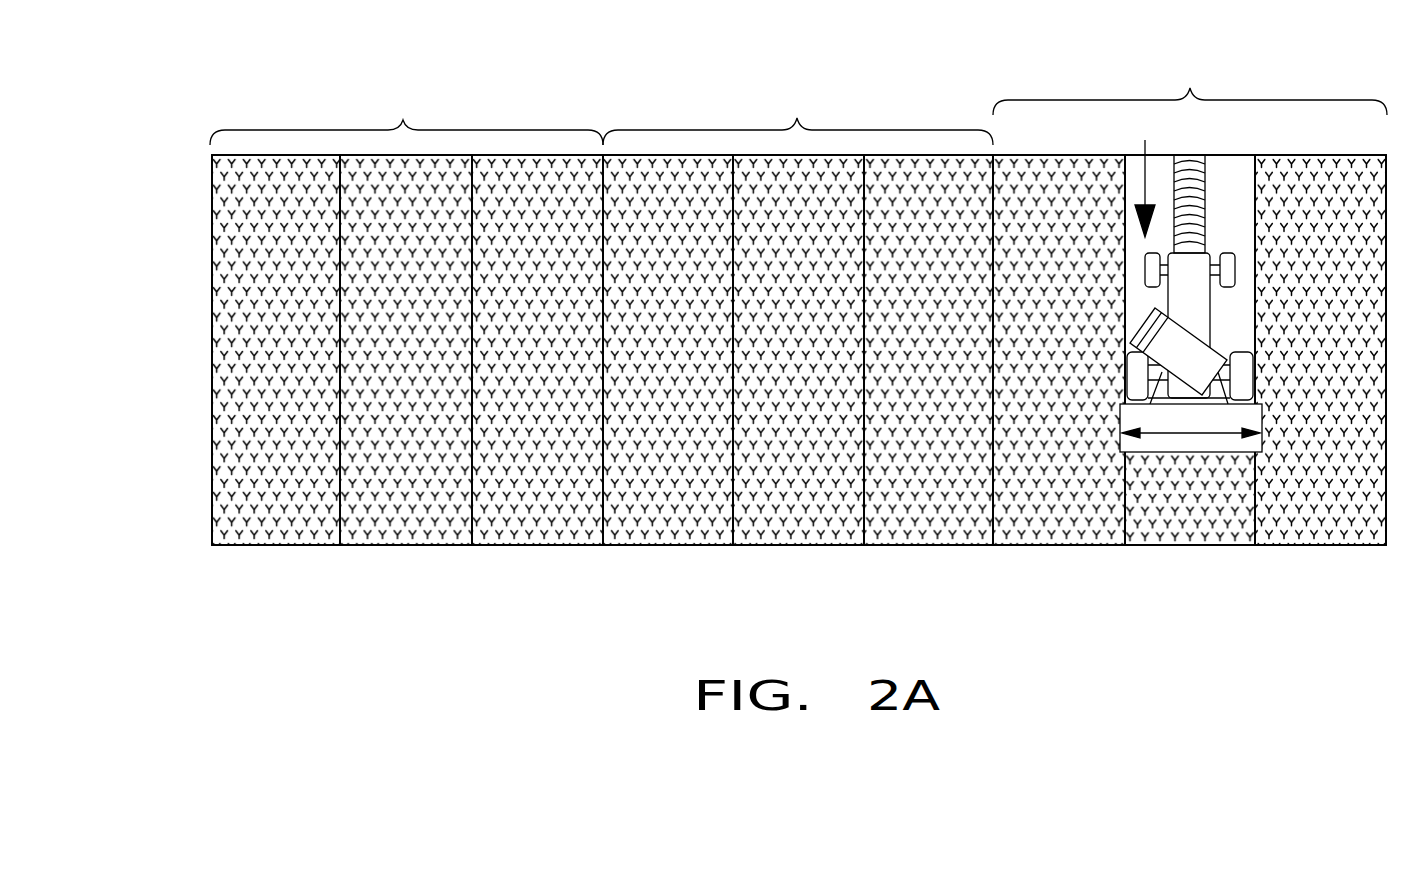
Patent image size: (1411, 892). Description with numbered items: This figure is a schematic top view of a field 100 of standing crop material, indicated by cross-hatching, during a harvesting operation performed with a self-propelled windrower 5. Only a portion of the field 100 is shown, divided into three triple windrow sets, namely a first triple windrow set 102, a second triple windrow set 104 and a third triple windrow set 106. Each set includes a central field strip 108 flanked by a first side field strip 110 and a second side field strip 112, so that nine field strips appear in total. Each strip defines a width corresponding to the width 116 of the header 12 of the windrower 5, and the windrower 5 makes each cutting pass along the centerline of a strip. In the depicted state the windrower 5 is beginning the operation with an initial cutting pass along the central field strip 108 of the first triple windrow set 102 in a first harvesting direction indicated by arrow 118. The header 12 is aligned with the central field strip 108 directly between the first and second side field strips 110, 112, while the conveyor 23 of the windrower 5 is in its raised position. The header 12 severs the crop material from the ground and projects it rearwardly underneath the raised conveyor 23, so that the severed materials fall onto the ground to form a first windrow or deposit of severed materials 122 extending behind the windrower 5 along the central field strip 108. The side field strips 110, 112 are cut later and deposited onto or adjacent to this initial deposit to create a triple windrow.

The field 100 is at (190, 194).
The first triple windrow set 102 is at (1190, 90).
The second triple windrow set 104 is at (797, 120).
The third triple windrow set 106 is at (403, 122).
The central field strip 108 is at (420, 530).
The first side field strip 110 is at (291, 530).
The second side field strip 112 is at (541, 530).
The arrow indicating first harvesting direction 118 is at (1143, 183).
The first windrow or deposit of severed materials 122 is at (1192, 168).
The self-propelled windrower 5 is at (1200, 265).
The conveyor 23 is at (1193, 355).
The header 12 is at (1154, 445).
The width of the header 116 is at (1197, 445).